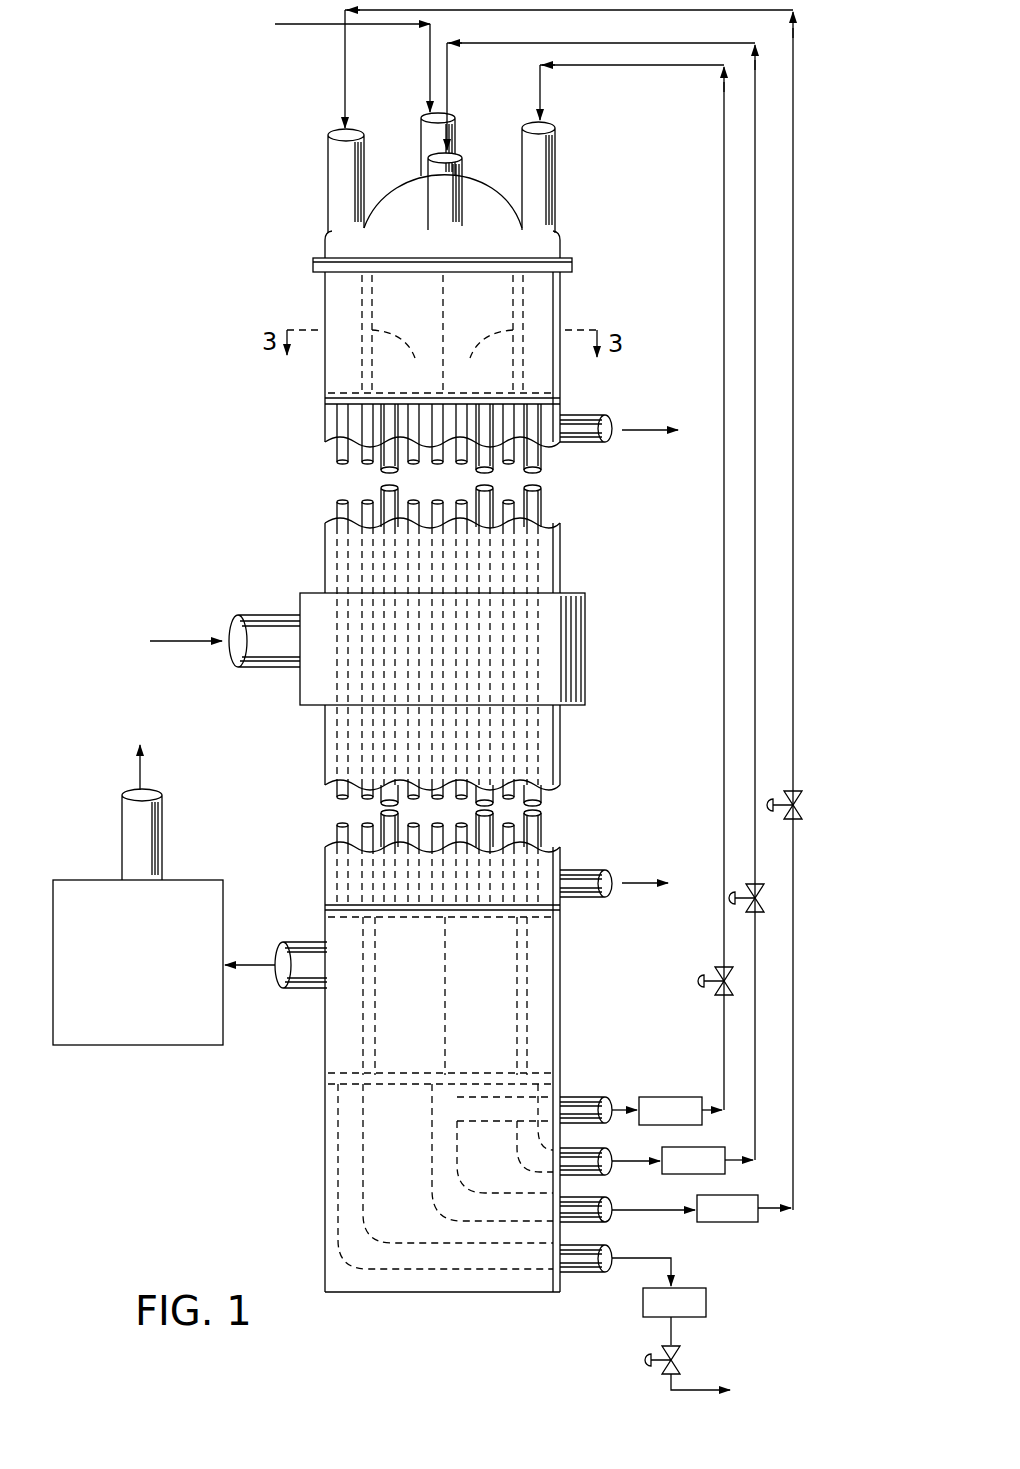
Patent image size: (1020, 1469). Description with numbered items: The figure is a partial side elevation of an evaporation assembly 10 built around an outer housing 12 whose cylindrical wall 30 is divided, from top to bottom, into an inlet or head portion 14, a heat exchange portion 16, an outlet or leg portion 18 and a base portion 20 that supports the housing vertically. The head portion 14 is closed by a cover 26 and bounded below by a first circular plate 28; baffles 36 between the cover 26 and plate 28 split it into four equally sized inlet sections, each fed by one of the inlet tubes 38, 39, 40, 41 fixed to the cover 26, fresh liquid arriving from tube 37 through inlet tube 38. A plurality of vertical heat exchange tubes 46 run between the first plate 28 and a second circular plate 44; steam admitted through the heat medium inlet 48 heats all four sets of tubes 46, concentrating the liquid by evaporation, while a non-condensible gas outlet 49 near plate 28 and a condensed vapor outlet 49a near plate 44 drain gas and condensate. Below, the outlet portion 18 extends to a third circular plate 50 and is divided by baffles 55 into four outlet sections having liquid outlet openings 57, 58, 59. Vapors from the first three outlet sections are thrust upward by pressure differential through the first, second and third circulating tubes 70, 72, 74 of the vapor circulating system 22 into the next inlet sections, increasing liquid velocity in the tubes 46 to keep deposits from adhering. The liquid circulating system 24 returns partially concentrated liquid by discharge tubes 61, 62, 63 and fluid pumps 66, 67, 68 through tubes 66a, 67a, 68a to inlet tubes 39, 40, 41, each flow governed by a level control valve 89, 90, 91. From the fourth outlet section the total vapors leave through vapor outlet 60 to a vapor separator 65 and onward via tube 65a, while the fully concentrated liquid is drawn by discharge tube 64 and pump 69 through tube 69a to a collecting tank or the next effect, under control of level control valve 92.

The evaporation assembly 10 is at (248, 200).
The outer housing 12 is at (322, 298).
The inlet or head portion 14 is at (570, 228).
The heat exchange portion 16 is at (578, 545).
The outlet or leg portion 18 is at (568, 975).
The base portion 20 is at (580, 1290).
The vapor circulating system 22 is at (575, 487).
The liquid circulating system 24 is at (718, 1230).
The cover 26 is at (325, 245).
The first circular plate 28 is at (325, 397).
The cylindrical wall 30 is at (323, 352).
The baffles 36 is at (442, 357).
The tube 37 is at (300, 25).
The inlet tube 38 is at (421, 136).
The inlet tube 39 is at (528, 147).
The inlet tube 40 is at (462, 197).
The inlet tube 41 is at (328, 166).
The second circular plate 44 is at (330, 908).
The heat exchange tubes 46 is at (333, 467).
The heat medium inlet 48 is at (258, 612).
The non-condensible gas outlet 49 is at (590, 414).
The condensed vapor outlet 49a is at (582, 868).
The third circular plate 50 is at (325, 1070).
The baffles 55 is at (375, 957).
The liquid outlet opening 57 is at (498, 1078).
The liquid outlet opening 58 is at (423, 1078).
The liquid outlet opening 59 is at (380, 1096).
The vapor outlet 60 is at (300, 940).
The discharge tube 61 is at (590, 1097).
The discharge tube 62 is at (592, 1152).
The discharge tube 63 is at (592, 1201).
The discharge tube 64 is at (592, 1251).
The vapor separator 65 is at (187, 879).
The tube 65a is at (122, 855).
The fluid pump 66 is at (660, 1097).
The tube 66a is at (723, 653).
The fluid pump 67 is at (697, 1148).
The tube 67a is at (754, 600).
The fluid pump 68 is at (737, 1196).
The tube 68a is at (793, 600).
The fluid pump 69 is at (706, 1301).
The tube 69a is at (697, 1390).
The first circulating tube 70 is at (548, 496).
The second circulating tube 72 is at (474, 465).
The third circulating tube 74 is at (470, 491).
The level control valve 89 is at (700, 969).
The level control valve 90 is at (742, 886).
The level control valve 91 is at (768, 792).
The level control valve 92 is at (644, 1362).